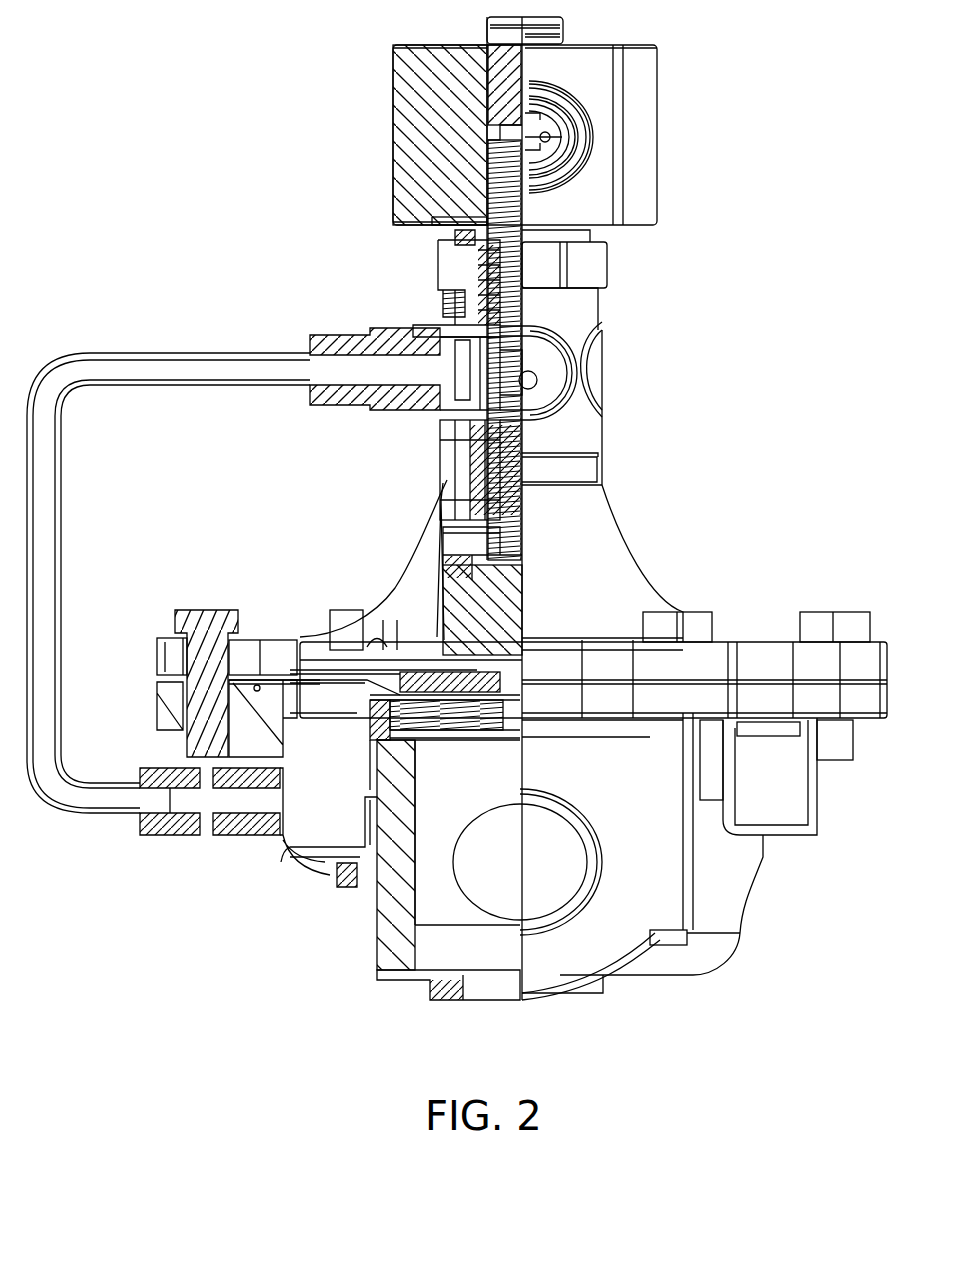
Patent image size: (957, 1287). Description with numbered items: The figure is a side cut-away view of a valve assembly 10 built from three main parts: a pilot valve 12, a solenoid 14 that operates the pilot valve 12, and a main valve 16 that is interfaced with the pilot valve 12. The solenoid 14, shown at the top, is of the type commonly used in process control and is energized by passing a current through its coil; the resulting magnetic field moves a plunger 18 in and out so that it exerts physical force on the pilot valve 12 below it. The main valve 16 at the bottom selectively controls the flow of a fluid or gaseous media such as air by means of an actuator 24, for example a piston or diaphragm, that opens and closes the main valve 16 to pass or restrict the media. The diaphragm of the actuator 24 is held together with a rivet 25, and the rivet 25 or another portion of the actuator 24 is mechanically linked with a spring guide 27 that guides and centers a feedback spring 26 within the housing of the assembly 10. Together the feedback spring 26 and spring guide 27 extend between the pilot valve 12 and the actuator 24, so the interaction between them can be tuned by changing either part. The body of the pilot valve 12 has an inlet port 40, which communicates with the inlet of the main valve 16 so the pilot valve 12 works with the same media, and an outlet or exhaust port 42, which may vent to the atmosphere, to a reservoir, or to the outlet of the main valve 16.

The valve assembly 10 is at (158, 1045).
The pilot valve 12 is at (673, 385).
The solenoid 14 is at (403, 112).
The main valve 16 is at (595, 935).
The plunger 18 is at (523, 210).
The actuator 24 is at (357, 703).
The rivet 25 is at (490, 667).
The feedback spring 26 is at (512, 480).
The spring guide 27 is at (460, 615).
The inlet port 40 is at (382, 330).
The outlet port 42 is at (535, 362).